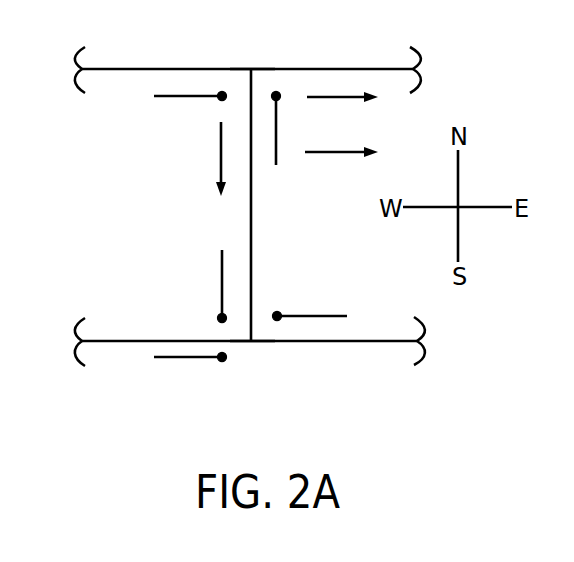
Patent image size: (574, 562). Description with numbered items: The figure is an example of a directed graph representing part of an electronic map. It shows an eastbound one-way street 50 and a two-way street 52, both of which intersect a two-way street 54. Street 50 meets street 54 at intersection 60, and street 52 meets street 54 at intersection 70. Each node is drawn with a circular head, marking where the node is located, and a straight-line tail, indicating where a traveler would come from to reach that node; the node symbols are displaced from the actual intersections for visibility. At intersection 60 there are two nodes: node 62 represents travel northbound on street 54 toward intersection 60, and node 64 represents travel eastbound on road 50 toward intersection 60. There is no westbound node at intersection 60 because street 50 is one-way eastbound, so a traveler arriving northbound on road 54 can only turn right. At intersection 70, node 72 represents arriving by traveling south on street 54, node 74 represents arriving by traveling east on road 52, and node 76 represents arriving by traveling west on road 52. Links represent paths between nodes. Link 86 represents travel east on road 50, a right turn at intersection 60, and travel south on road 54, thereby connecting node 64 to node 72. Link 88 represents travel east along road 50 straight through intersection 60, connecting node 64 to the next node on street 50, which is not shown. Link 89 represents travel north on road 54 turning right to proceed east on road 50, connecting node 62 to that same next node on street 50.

The eastbound one-way street 50 is at (325, 69).
The two-way street 52 is at (328, 343).
The two-way street 54 is at (252, 216).
The intersection 60 is at (253, 69).
The node 62 is at (277, 133).
The node 64 is at (193, 97).
The intersection 70 is at (254, 343).
The node 72 is at (221, 289).
The node 74 is at (192, 359).
The node 76 is at (309, 316).
The link 86 is at (220, 148).
The link 88 is at (321, 100).
The link 89 is at (321, 155).